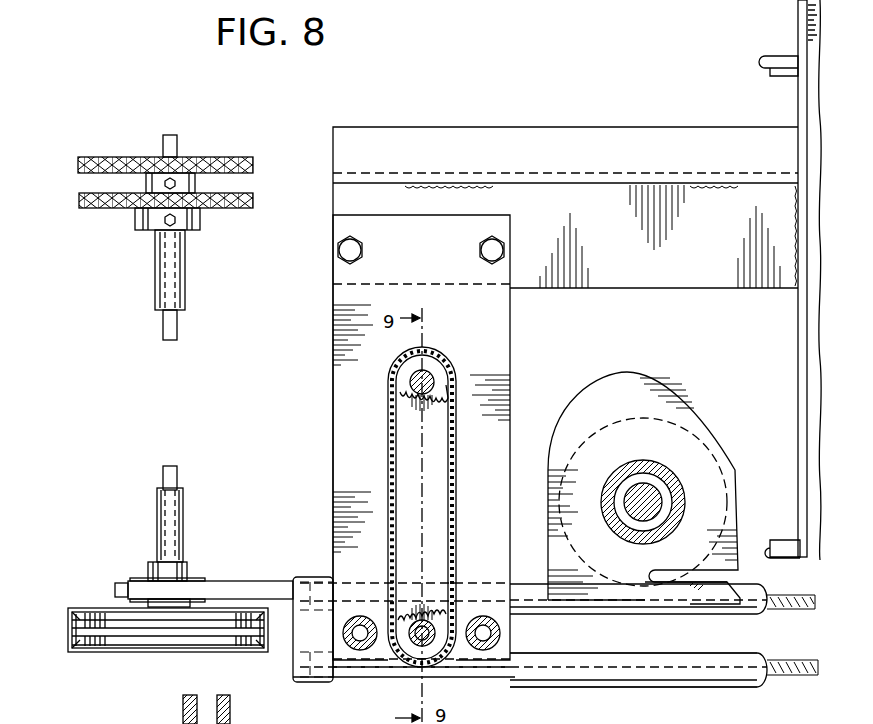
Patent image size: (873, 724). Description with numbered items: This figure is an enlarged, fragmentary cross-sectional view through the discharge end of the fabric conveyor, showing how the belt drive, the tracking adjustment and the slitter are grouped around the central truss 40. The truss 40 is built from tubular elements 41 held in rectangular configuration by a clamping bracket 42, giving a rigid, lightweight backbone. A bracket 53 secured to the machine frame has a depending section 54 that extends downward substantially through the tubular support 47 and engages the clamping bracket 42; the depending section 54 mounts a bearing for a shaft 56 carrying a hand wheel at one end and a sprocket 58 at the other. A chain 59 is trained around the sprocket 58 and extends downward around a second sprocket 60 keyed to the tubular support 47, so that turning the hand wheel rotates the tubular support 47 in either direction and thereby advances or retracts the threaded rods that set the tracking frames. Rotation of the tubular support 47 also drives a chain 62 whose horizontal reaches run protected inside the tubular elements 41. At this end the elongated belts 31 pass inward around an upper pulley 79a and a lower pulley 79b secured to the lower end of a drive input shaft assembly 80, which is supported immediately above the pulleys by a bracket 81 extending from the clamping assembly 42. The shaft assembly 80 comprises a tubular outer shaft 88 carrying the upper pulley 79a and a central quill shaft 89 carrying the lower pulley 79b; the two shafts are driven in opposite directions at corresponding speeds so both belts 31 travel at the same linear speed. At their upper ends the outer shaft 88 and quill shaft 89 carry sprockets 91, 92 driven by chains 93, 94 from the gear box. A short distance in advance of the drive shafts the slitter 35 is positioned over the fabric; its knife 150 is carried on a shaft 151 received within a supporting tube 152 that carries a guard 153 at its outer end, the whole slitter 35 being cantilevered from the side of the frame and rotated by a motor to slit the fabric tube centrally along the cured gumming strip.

The elongated belts 31 is at (68, 645).
The slitter 35 is at (628, 366).
The truss 40 is at (598, 692).
The tubular elements 41 is at (540, 598).
The clamping bracket 42 is at (480, 670).
The tubular support 47 is at (412, 648).
The bracket 53 is at (367, 198).
The depending section 54 is at (352, 450).
The shaft 56 is at (432, 392).
The sprocket 58 is at (430, 372).
The chain 59 is at (450, 497).
The second sprocket 60 is at (410, 616).
The chain 62 is at (780, 612).
The upper pulley 79a is at (97, 607).
The lower pulley 79b is at (112, 642).
The drive input shaft assembly 80 is at (146, 521).
The bracket 81 is at (222, 592).
The tubular outer shaft 88 is at (185, 278).
The quill shaft 89 is at (177, 330).
The sprocket 91 is at (200, 215).
The sprocket 92 is at (190, 183).
The chain 93 is at (232, 207).
The chain 94 is at (233, 160).
The cam follower 150 is at (668, 590).
The cam shaft 151 is at (645, 495).
The cam hub 152 is at (683, 488).
The guard 153 is at (690, 407).